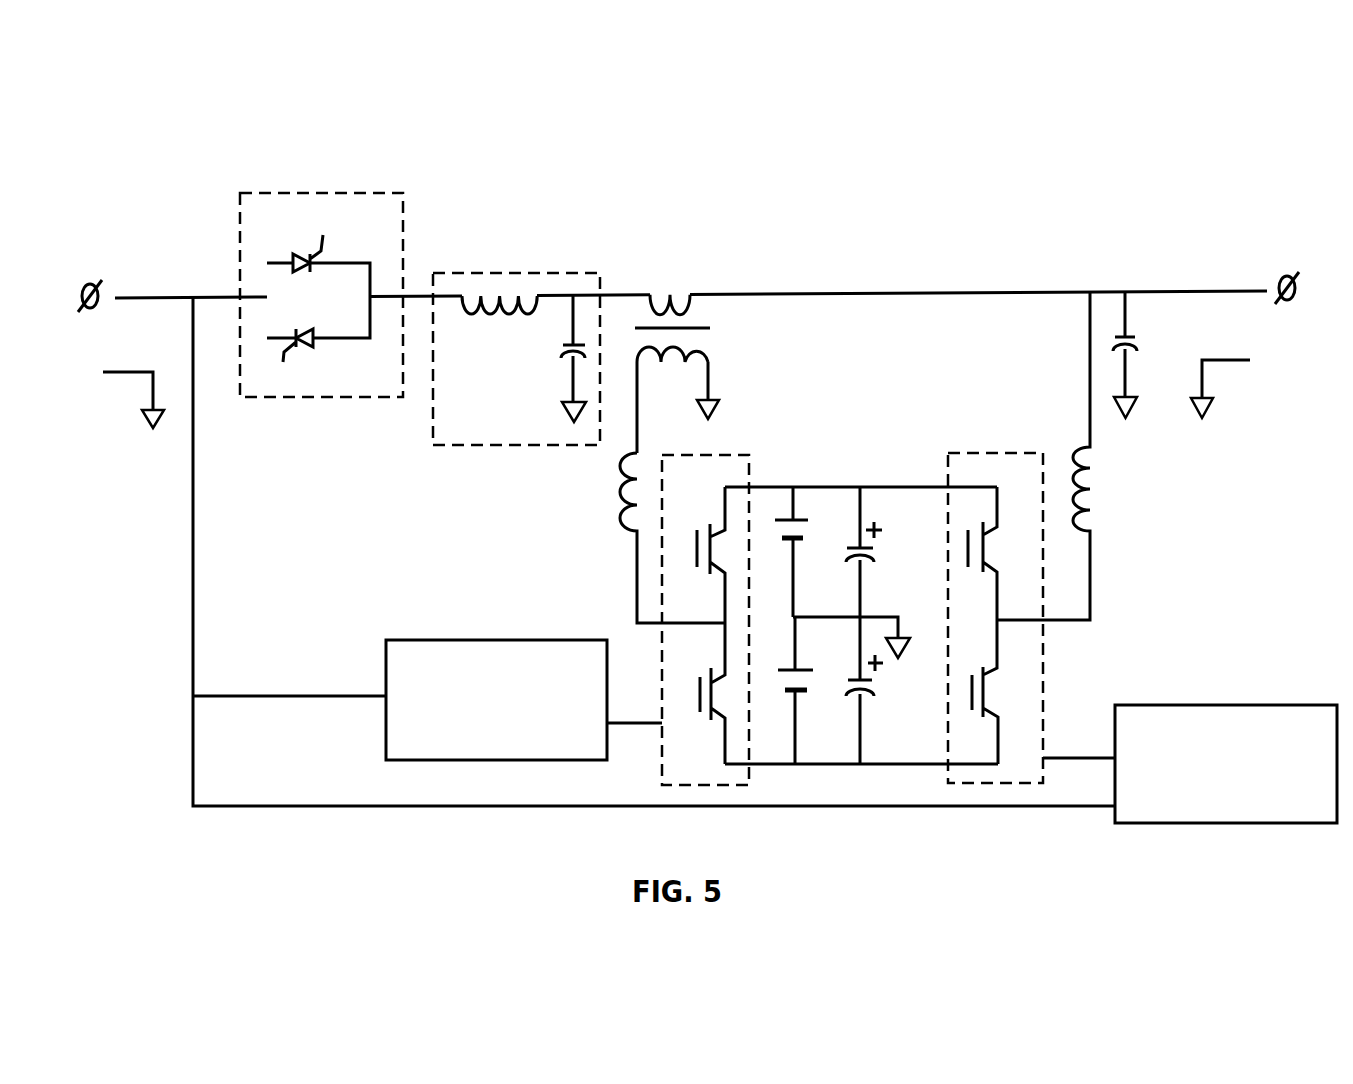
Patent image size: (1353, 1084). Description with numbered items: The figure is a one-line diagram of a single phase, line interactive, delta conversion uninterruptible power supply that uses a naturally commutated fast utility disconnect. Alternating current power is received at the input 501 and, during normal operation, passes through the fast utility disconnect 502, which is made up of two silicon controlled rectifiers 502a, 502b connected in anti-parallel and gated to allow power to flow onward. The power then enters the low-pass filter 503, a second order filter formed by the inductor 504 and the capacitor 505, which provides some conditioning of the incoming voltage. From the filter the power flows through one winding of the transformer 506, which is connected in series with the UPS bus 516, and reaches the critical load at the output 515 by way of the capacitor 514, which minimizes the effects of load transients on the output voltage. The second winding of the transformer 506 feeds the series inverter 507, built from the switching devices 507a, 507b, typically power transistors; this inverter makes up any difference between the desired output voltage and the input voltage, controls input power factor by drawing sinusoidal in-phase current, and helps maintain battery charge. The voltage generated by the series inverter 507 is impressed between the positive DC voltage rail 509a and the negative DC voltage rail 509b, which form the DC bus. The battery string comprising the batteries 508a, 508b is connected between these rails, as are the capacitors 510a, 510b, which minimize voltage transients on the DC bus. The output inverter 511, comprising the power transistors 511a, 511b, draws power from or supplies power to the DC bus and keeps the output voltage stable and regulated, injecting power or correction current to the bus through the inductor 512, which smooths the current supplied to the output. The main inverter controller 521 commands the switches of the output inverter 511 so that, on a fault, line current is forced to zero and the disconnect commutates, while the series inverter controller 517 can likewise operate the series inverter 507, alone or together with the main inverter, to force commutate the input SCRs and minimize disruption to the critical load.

The input 501 is at (95, 388).
The naturally commutated fast utility disconnect 502 is at (321, 313).
The silicon controlled rectifier 502a is at (316, 361).
The silicon controlled rectifier 502b is at (317, 236).
The low-pass filter 503 is at (516, 376).
The inductor 504 is at (499, 325).
The capacitor 505 is at (549, 358).
The transformer 506 is at (700, 374).
The series inverter 507 is at (705, 603).
The switching device 507a is at (696, 555).
The switching device 507b is at (697, 693).
The battery 508a is at (816, 552).
The battery 508b is at (819, 690).
The positive DC voltage rail 509a is at (861, 467).
The negative DC voltage rail 509b is at (861, 785).
The capacitor 510a is at (884, 552).
The capacitor 510b is at (885, 690).
The output inverter 511 is at (1018, 618).
The power transistor 511a is at (974, 553).
The power transistor 511b is at (975, 692).
The inductor 512 is at (1068, 456).
The capacitor 514 is at (1152, 355).
The output 515 is at (1238, 382).
The UPS bus 516 is at (915, 292).
The series inverter controller 517 is at (485, 640).
The main inverter controller 521 is at (1190, 705).